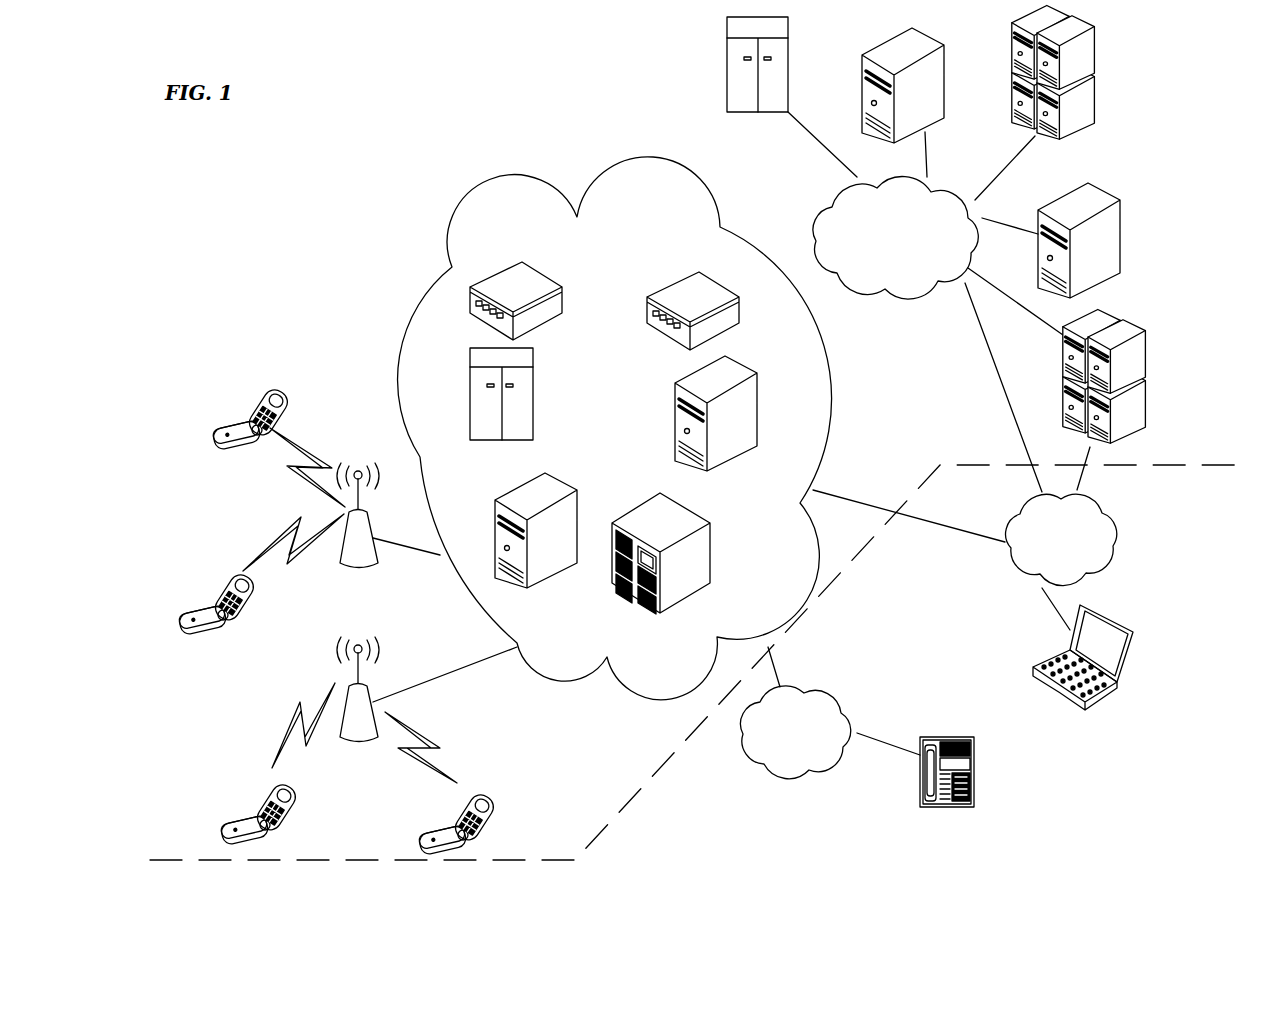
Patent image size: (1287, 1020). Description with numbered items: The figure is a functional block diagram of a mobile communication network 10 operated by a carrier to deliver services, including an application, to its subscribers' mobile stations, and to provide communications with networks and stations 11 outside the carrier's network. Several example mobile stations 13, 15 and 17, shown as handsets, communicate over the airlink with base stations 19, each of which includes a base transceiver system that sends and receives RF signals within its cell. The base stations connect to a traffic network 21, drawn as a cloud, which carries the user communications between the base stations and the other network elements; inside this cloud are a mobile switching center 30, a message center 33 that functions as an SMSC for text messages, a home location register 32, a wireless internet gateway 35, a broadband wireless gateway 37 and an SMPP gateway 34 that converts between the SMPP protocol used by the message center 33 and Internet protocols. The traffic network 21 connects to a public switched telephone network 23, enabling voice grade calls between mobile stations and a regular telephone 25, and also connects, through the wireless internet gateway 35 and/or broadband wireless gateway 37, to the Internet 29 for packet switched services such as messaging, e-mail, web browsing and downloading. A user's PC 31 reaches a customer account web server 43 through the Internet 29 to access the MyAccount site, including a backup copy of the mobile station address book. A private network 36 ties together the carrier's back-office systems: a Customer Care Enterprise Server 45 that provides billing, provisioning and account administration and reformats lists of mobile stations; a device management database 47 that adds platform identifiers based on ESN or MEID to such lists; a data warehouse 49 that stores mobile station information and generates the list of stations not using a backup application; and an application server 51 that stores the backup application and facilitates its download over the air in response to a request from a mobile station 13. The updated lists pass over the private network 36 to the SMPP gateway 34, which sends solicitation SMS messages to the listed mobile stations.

The mobile communication network 10 is at (447, 215).
The networks and stations outside the mobile communication network 11 is at (697, 662).
The mobile station 13 is at (247, 397).
The mobile station 15 is at (233, 817).
The mobile station 17 is at (477, 797).
The base station 19 is at (362, 512).
The traffic network 21 is at (637, 180).
The public switched telephone network 23 is at (755, 767).
The telephone 25 is at (977, 753).
The Internet 29 is at (1127, 528).
The mobile switching center 30 is at (537, 530).
The PC 31 is at (1113, 618).
The home location register 32 is at (687, 568).
The message center 33 is at (468, 383).
The SMPP gateway 34 is at (692, 295).
The wireless internet gateway 35 is at (758, 410).
The private network 36 is at (880, 303).
The broadband wireless gateway 37 is at (518, 283).
The customer account web server 43 is at (1123, 317).
The Customer Care Enterprise Server 45 is at (1082, 133).
The device management database 47 is at (890, 38).
The data warehouse 49 is at (728, 63).
The application server 51 is at (1120, 202).